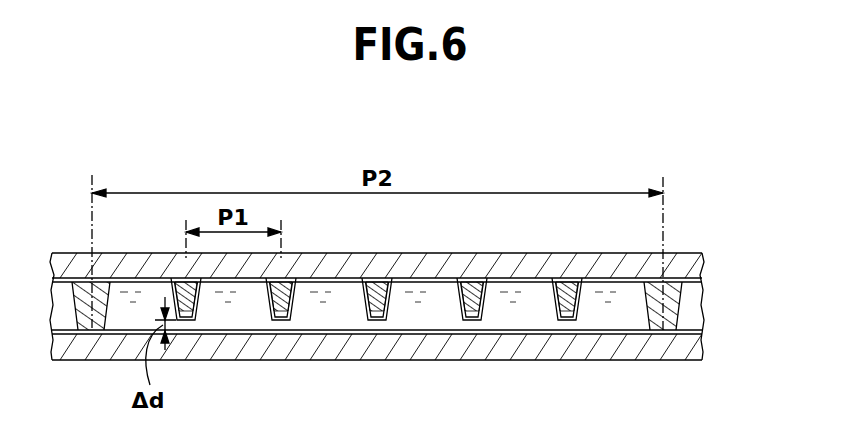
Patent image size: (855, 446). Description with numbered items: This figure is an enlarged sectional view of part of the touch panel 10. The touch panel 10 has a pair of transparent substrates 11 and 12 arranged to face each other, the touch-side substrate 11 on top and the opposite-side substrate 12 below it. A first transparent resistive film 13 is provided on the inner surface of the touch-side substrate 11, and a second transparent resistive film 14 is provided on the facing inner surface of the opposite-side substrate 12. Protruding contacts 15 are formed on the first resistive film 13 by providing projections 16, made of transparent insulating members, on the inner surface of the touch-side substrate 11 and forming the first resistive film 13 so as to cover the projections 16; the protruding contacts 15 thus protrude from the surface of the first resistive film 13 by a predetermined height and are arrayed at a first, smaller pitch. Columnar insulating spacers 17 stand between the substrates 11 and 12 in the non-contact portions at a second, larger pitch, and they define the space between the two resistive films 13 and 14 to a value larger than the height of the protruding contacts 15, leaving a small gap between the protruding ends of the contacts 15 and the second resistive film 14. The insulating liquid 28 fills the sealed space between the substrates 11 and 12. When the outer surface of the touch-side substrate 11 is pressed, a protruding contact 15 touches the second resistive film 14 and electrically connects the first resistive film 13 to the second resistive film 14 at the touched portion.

The touch panel 10 is at (692, 242).
The touch-side substrate 11 is at (683, 269).
The opposite-side substrate 12 is at (683, 348).
The first transparent resistive film 13 is at (323, 266).
The second transparent resistive film 14 is at (378, 332).
The protruding contact 15 is at (192, 322).
The projection 16 is at (477, 277).
The insulating spacer 17 is at (85, 323).
The insulating liquid 28 is at (417, 308).